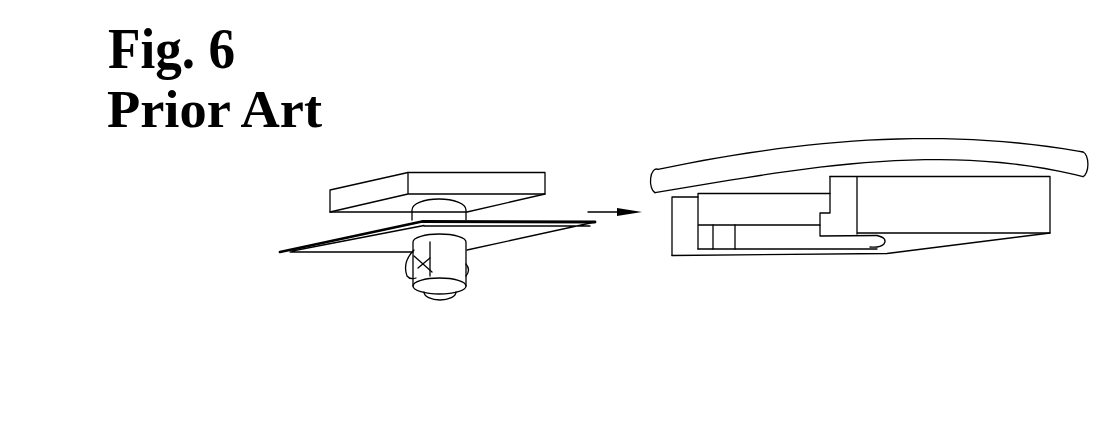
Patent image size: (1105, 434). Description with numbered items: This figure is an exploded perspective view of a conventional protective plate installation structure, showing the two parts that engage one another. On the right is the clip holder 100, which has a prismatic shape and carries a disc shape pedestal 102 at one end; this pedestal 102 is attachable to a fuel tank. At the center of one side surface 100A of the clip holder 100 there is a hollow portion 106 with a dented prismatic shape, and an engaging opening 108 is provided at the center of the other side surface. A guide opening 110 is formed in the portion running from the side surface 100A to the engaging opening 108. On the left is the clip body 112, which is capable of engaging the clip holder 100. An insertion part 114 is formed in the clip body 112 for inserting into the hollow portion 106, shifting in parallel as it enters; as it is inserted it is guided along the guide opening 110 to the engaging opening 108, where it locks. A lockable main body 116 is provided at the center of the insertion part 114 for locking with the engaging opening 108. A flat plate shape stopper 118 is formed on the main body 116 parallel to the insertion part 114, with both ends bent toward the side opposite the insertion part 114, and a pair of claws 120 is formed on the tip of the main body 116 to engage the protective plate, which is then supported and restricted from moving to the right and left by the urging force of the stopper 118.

The clip holder 100 is at (958, 124).
The side surface 100A is at (688, 241).
The disc shape pedestal 102 is at (808, 154).
The hollow portion 106 is at (803, 206).
The engaging opening 108 is at (874, 247).
The guide opening 110 is at (747, 237).
The clip body 112 is at (474, 144).
The insertion part 114 is at (360, 191).
The main body 116 is at (445, 270).
The stopper 118 is at (338, 250).
The claws 120 is at (409, 273).